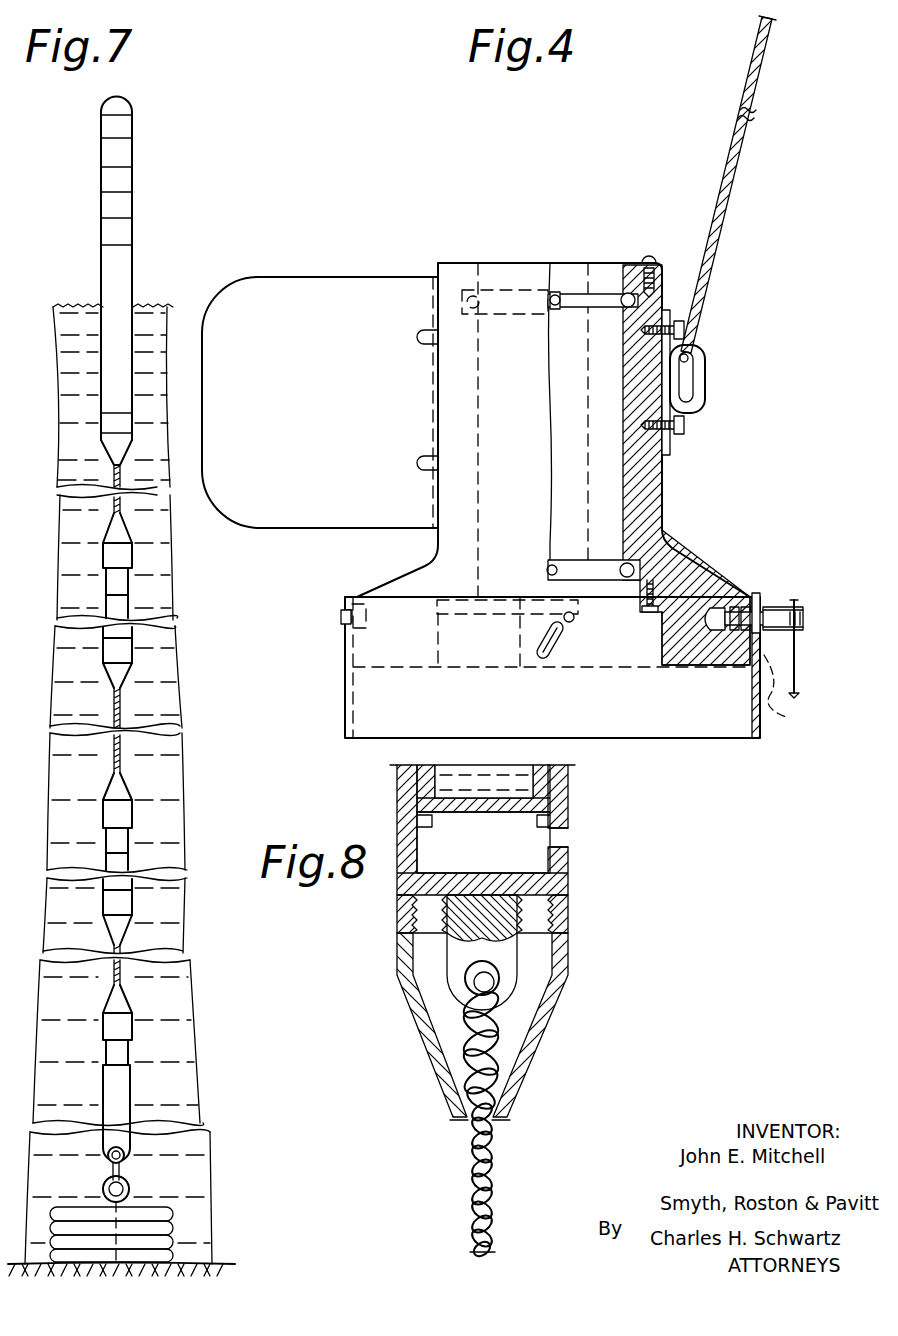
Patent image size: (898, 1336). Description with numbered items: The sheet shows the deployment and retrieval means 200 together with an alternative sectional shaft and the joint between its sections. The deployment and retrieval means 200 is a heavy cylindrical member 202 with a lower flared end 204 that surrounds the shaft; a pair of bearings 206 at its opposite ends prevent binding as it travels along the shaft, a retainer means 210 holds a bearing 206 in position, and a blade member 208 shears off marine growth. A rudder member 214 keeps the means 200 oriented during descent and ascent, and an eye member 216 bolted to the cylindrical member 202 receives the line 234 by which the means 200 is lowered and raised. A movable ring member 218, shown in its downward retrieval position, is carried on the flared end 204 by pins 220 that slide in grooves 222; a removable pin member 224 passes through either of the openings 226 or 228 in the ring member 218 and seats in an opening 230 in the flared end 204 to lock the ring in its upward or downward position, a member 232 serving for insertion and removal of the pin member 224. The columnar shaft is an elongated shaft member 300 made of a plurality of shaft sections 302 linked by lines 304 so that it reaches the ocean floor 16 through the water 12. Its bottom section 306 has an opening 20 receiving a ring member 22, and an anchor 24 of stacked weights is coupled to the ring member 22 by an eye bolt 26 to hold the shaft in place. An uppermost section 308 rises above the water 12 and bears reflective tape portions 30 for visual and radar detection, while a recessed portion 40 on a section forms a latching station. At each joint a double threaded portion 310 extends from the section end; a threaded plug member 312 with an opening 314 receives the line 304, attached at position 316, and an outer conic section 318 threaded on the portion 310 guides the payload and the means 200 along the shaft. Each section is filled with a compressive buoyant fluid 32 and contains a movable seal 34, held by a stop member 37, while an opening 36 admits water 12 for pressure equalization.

In FIG. 7, the water 12 is at (75, 357).
In FIG. 7, the ocean floor 16 is at (228, 1267).
In FIG. 7, the opening 20 is at (125, 1150).
In FIG. 7, the ring member 22 is at (130, 1175).
In FIG. 7, the anchor 24 is at (175, 1228).
In FIG. 7, the eye bolt 26 is at (125, 1203).
In FIG. 7, the reflective tape portions 30 is at (133, 128).
In FIG. 8, the compressive buoyant fluid 32 is at (503, 782).
In FIG. 8, the movable seal 34 is at (540, 787).
In FIG. 8, the opening 36 is at (560, 838).
In FIG. 8, the stop member 37 is at (538, 822).
In FIG. 7, the recessed portion 40 is at (105, 838).
In FIG. 4, the deployment and retrieval means 200 is at (683, 546).
In FIG. 4, the cylindrical member 202 is at (650, 480).
In FIG. 4, the lower flared end 204 is at (728, 600).
In FIG. 4, the bearings 206 is at (590, 300).
In FIG. 4, the blade member 208 is at (652, 612).
In FIG. 4, the retainer means 210 is at (652, 270).
In FIG. 4, the rudder member 214 is at (312, 322).
In FIG. 4, the eye member 216 is at (702, 378).
In FIG. 4, the movable ring member 218 is at (765, 727).
In FIG. 4, the pins 220 is at (341, 617).
In FIG. 4, the grooves 222 is at (553, 658).
In FIG. 4, the removable pin member 224 is at (788, 630).
In FIG. 4, the opening 226 is at (770, 606).
In FIG. 4, the opening 228 is at (783, 717).
In FIG. 4, the opening 230 is at (757, 598).
In FIG. 4, the member 232 is at (798, 680).
In FIG. 4, the line 234 is at (727, 205).
In FIG. 7, the elongated shaft member 300 is at (90, 259).
In FIG. 7, the shaft sections 302 is at (133, 605).
In FIG. 7, the lines 304 is at (115, 478).
In FIG. 8, the lines 304 is at (470, 1183).
In FIG. 7, the bottom section 306 is at (125, 1083).
In FIG. 7, the uppermost section 308 is at (110, 155).
In FIG. 8, the double threaded portion 310 is at (548, 915).
In FIG. 8, the threaded plug member 312 is at (505, 953).
In FIG. 8, the opening 314 is at (468, 983).
In FIG. 8, the attachment position 316 is at (500, 1040).
In FIG. 7, the outer conic section 318 is at (108, 448).
In FIG. 8, the outer conic section 318 is at (540, 1022).